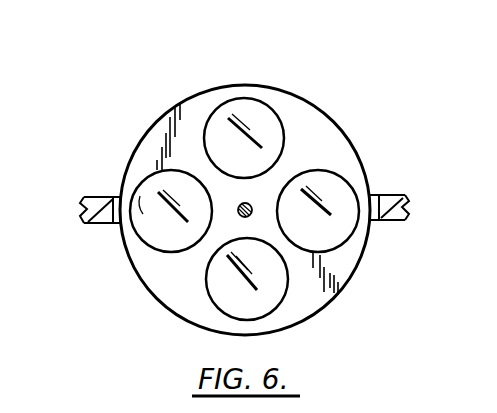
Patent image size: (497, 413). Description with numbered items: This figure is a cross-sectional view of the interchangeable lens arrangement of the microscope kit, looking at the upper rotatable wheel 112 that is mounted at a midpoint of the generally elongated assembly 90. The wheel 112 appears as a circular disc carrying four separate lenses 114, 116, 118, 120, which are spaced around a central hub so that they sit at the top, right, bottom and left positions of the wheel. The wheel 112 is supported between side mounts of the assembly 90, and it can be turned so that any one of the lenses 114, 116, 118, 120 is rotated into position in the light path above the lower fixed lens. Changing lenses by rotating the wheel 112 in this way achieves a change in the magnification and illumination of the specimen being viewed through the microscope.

The elongated assembly 90 is at (385, 194).
The rotatable wheel 112 is at (131, 287).
The lens 114 is at (256, 106).
The lens 116 is at (335, 225).
The lens 118 is at (270, 293).
The lens 120 is at (152, 205).